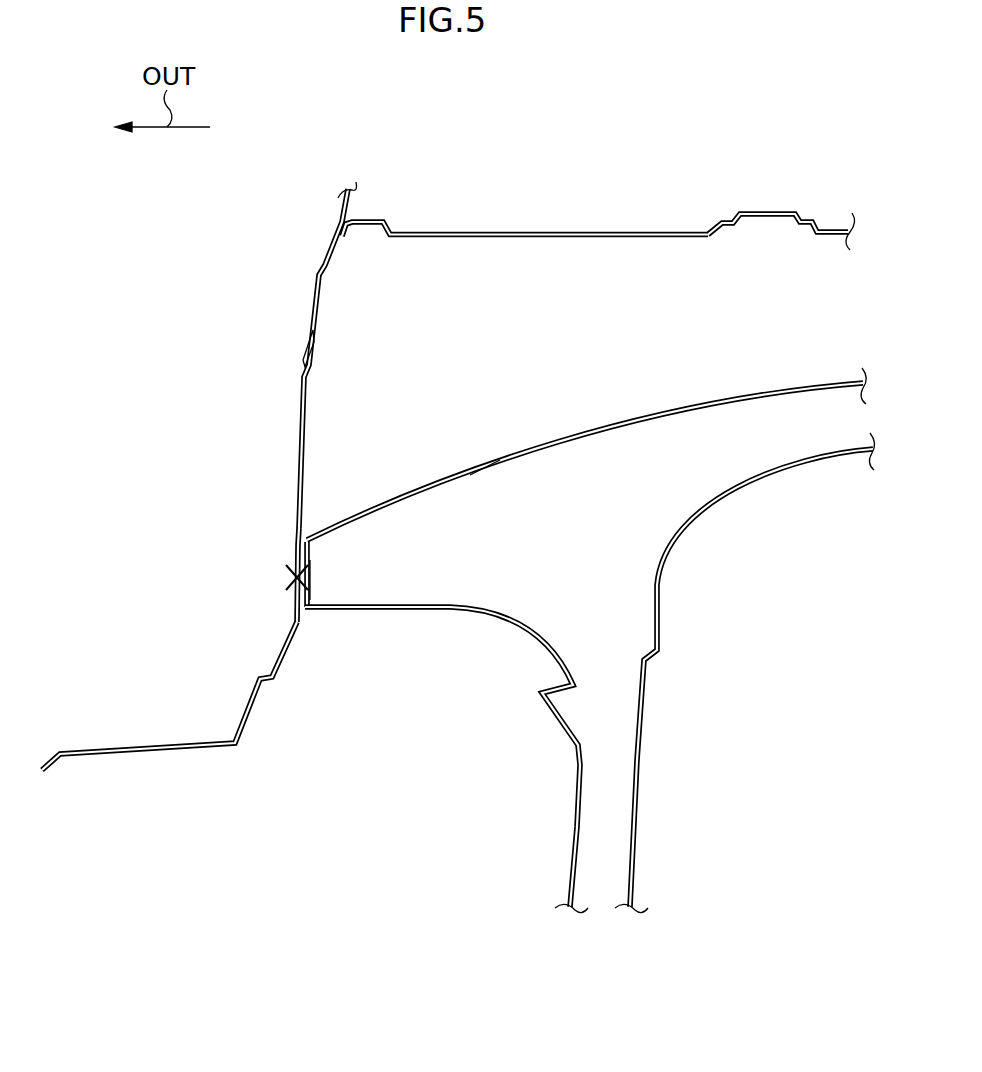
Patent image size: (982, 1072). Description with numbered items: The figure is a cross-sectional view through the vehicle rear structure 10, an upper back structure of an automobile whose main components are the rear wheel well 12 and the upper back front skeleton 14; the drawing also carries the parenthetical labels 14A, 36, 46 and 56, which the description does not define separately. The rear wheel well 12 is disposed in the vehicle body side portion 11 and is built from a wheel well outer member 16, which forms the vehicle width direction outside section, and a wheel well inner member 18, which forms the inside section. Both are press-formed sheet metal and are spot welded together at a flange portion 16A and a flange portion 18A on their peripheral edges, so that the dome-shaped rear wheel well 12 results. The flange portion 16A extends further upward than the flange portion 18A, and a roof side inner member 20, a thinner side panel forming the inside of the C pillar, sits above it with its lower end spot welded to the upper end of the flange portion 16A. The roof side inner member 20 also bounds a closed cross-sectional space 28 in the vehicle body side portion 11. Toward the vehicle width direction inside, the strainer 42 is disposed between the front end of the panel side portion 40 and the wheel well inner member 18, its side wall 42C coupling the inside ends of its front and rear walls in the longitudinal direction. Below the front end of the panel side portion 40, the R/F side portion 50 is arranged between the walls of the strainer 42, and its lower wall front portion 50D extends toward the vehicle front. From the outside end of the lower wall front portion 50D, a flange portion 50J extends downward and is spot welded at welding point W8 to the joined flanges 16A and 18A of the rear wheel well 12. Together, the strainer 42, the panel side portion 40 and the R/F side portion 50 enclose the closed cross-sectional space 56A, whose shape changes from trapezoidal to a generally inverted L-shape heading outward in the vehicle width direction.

The vehicle rear structure 10 is at (803, 143).
The vehicle body side portion 11 is at (385, 165).
The rear wheel well 12 is at (546, 618).
The upper back front skeleton 14 is at (598, 189).
The roof panel side portion 14A is at (500, 215).
The wheel well outer member 16 is at (155, 742).
The flange portion 16A is at (292, 548).
The wheel well inner member 18 is at (457, 618).
The flange portion 18A is at (303, 535).
The roof side inner member 20 is at (322, 268).
The closed cross-sectional space 28 is at (186, 376).
The roof member 36 is at (744, 202).
The panel side portion 40 is at (652, 230).
The strainer 42 is at (745, 673).
The side wall 42C is at (650, 692).
The reinforcement 46 is at (586, 454).
The R/F side portion 50 is at (627, 412).
The lower wall front portion 50D is at (523, 443).
The flange portion 50J is at (309, 574).
The space 56 is at (522, 306).
The closed cross-sectional space 56A is at (563, 321).
The welding point W8 is at (287, 568).